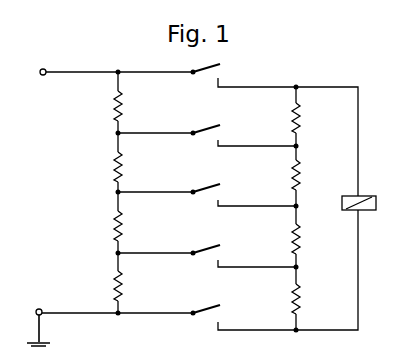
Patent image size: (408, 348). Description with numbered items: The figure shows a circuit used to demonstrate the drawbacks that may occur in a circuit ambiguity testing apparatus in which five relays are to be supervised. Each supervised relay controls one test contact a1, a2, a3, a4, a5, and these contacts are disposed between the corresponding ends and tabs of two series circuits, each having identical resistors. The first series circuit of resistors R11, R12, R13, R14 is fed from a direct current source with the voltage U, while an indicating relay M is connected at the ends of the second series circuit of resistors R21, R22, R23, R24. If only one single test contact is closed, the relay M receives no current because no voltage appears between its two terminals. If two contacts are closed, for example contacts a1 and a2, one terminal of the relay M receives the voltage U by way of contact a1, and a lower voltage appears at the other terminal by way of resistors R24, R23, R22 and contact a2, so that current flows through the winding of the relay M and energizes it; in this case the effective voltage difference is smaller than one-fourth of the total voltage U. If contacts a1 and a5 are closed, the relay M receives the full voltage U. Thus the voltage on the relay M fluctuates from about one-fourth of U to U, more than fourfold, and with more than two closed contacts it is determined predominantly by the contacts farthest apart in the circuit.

The voltage U is at (72, 73).
The resistor R11 is at (104, 106).
The resistor R12 is at (104, 167).
The resistor R13 is at (104, 226).
The resistor R14 is at (104, 286).
The resistor R21 is at (311, 118).
The resistor R22 is at (311, 175).
The resistor R23 is at (311, 239).
The resistor R24 is at (311, 299).
The test contact a1 is at (207, 69).
The test contact a2 is at (207, 129).
The test contact a3 is at (207, 189).
The test contact a4 is at (207, 250).
The test contact a5 is at (207, 311).
The indicating relay M is at (366, 204).